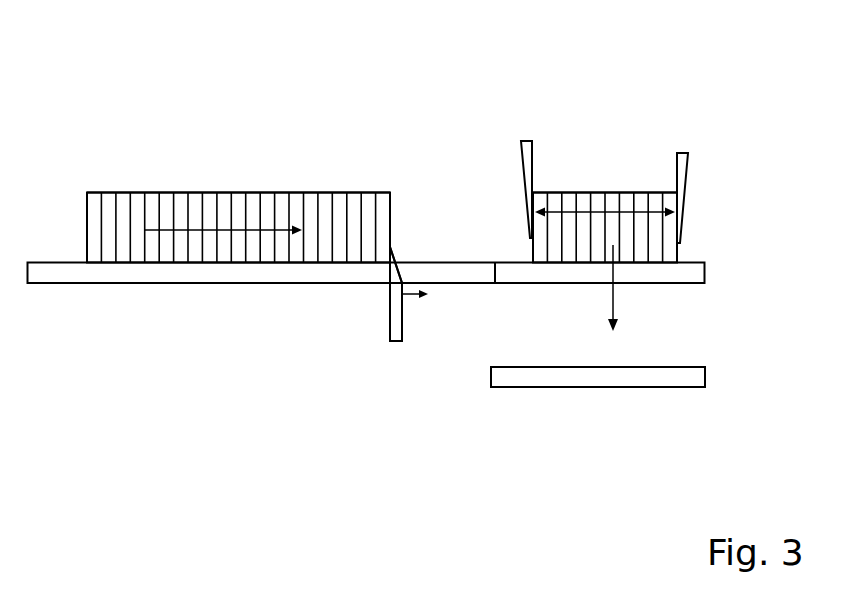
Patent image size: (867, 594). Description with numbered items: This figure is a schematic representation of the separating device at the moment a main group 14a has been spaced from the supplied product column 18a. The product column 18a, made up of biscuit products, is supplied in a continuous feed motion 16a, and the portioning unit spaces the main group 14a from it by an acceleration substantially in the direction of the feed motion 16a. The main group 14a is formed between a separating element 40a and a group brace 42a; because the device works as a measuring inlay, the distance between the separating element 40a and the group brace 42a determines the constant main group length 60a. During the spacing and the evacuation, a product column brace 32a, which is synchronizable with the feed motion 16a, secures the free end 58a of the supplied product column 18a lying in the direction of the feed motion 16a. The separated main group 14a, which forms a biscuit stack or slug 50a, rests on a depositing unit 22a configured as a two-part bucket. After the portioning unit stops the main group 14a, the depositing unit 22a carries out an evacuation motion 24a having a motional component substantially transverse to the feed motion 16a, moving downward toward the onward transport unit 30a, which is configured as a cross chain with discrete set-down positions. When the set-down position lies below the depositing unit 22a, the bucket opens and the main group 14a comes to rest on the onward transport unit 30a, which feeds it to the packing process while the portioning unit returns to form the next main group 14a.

The main group 14a is at (587, 191).
The feed motion 16a is at (252, 230).
The product column 18a is at (155, 178).
The depositing unit 22a is at (705, 285).
The evacuation motion 24a is at (613, 285).
The onward transport unit 30a is at (633, 373).
The product column brace 32a is at (395, 297).
The separating element 40a is at (527, 168).
The group brace 42a is at (683, 162).
The slug 50a is at (613, 172).
The free end 58a is at (403, 213).
The main group length 60a is at (642, 203).